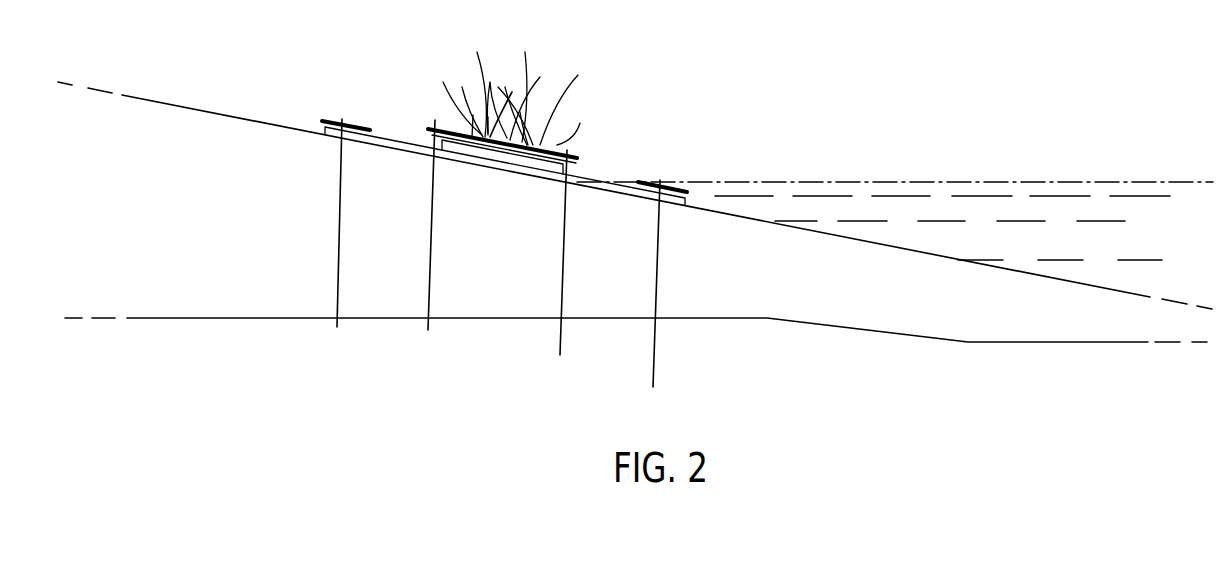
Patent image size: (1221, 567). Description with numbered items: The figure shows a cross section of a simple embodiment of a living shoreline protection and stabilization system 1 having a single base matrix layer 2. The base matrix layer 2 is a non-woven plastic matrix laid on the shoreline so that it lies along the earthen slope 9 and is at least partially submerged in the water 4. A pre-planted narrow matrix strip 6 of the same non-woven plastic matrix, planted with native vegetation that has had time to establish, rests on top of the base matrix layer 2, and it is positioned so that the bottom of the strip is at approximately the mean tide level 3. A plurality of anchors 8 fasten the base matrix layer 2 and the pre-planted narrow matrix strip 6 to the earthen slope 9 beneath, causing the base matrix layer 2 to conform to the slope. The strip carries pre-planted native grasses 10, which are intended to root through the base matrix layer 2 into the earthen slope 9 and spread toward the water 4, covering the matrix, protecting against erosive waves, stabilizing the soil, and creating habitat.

The living shoreline protection and stabilization system 1 is at (402, 147).
The base matrix layer 2 is at (335, 133).
The mean tide level 3 is at (857, 182).
The water 4 is at (1050, 244).
The pre-planted narrow matrix strip 6 is at (562, 162).
The anchors 8 is at (340, 224).
The earthen slope 9 is at (232, 138).
The pre-planted native grasses 10 is at (512, 92).